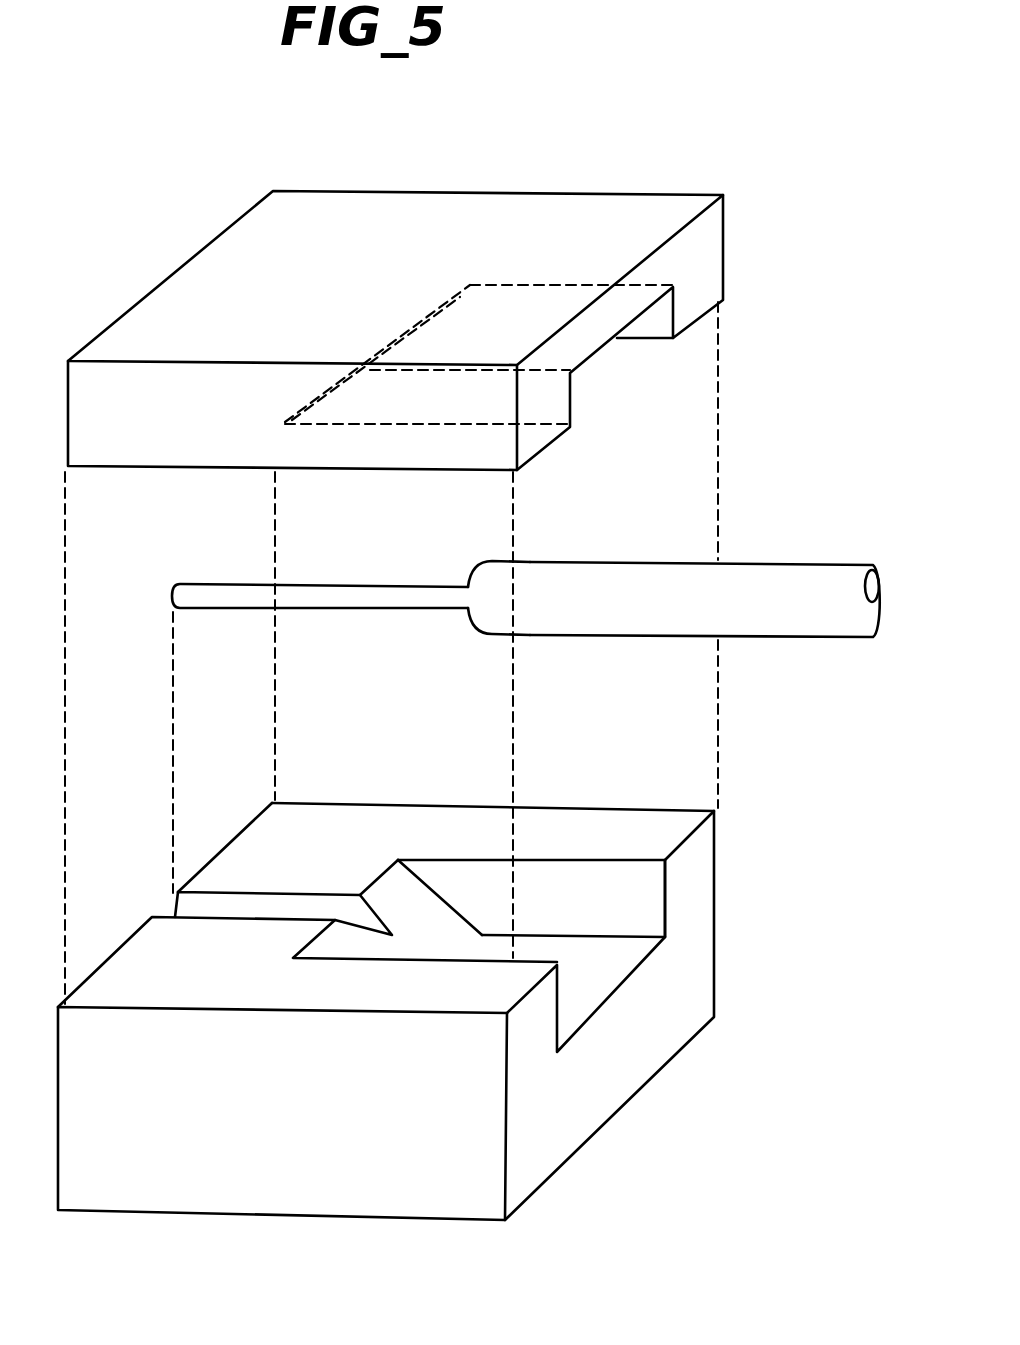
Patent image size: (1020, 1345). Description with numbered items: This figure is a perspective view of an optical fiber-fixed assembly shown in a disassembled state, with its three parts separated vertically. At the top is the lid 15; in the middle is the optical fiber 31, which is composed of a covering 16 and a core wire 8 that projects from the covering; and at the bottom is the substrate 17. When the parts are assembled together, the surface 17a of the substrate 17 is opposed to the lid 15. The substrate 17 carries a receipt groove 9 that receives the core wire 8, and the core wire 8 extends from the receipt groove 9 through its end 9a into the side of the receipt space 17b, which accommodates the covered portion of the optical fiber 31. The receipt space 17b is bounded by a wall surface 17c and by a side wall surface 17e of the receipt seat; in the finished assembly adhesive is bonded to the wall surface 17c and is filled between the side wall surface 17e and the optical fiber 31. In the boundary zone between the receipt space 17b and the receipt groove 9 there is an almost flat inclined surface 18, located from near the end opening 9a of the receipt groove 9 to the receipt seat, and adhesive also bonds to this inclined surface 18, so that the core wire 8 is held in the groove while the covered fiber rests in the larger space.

The lid 15 is at (640, 185).
The core wire 8 is at (366, 592).
The covering 16 is at (674, 562).
The optical fiber 31 is at (632, 561).
The substrate 17 is at (447, 973).
The surface of the substrate 17a is at (352, 822).
The side wall surface of the receipt seat 17e is at (577, 897).
The receipt space 17b is at (670, 910).
The wall surface of the receipt space 17c is at (587, 987).
The inclined surface 18 is at (428, 935).
The receipt groove 9 is at (228, 897).
The end of the receipt groove 9a is at (365, 915).